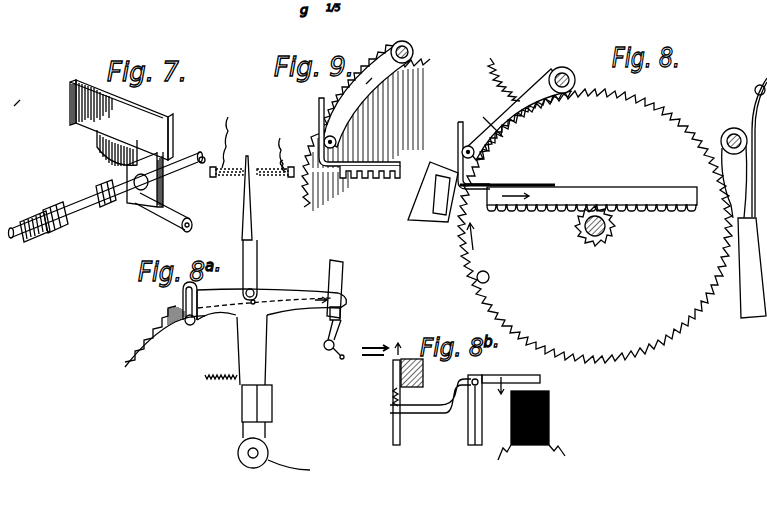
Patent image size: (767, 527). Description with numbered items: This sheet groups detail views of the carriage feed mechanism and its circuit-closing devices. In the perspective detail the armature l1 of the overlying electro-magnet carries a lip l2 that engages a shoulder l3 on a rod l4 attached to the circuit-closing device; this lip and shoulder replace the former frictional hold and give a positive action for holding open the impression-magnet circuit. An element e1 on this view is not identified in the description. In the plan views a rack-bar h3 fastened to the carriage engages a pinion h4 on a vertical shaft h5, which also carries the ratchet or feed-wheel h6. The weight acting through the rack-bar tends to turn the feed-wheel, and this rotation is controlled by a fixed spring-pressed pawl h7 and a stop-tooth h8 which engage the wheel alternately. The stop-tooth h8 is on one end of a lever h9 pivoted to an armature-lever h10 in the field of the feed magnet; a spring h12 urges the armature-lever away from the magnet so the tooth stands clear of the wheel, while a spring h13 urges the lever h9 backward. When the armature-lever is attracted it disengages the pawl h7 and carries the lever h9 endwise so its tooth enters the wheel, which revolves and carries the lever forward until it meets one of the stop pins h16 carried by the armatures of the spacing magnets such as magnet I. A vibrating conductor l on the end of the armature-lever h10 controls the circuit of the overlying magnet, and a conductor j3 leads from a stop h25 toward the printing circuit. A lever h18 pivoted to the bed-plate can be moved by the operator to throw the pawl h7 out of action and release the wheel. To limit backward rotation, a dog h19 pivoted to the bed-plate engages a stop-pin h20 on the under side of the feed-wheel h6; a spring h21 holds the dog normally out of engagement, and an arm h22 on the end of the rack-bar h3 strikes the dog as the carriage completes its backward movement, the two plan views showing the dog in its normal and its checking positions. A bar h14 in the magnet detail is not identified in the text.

In FIG. 7, the lever e1 is at (10, 111).
In FIG. 7, the armature l1 is at (121, 143).
In FIG. 7, the lip l2 is at (128, 212).
In FIG. 7, the shoulder l3 is at (97, 194).
In FIG. 7, the rod l4 is at (106, 197).
In FIG. 9, the vibrating conductor l is at (246, 198).
In FIG. 8A, the vibrating conductor l is at (250, 272).
In FIG. 9, the conductor j3 is at (242, 147).
In FIG. 9, the stop h25 is at (275, 162).
In FIG. 9, the rack-bar h3 is at (370, 172).
In FIG. 8, the rack-bar h3 is at (578, 198).
In FIG. 8, the pinion h4 is at (598, 246).
In FIG. 8, the vertical shaft h5 is at (611, 226).
In FIG. 9, the feed-wheel h6 is at (357, 141).
In FIG. 8, the feed-wheel h6 is at (595, 230).
In FIG. 8, the fixed pawl h7 is at (734, 173).
In FIG. 8A, the fixed pawl h7 is at (324, 344).
In FIG. 8, the stop-tooth h8 is at (433, 192).
In FIG. 8A, the stop-lever h9 is at (175, 327).
In FIG. 8B, the stop-lever h9 is at (390, 373).
In FIG. 8A, the armature-lever h10 is at (273, 392).
In FIG. 8A, the spring h12 is at (217, 388).
In FIG. 8A, the spring h13 is at (275, 302).
In FIG. 8B, the bar h14 is at (455, 378).
In FIG. 8B, the stop pins h16 is at (395, 381).
In FIG. 8, the lever h18 is at (751, 198).
In FIG. 8A, the lever h18 is at (343, 272).
In FIG. 9, the dog h19 is at (380, 72).
In FIG. 8, the dog h19 is at (501, 97).
In FIG. 8, the stop-pin h20 is at (489, 277).
In FIG. 9, the spring h21 is at (385, 45).
In FIG. 8, the spring h21 is at (516, 74).
In FIG. 9, the arm h22 is at (319, 105).
In FIG. 8, the arm h22 is at (457, 126).
In FIG. 8B, the spacing magnet I is at (549, 417).